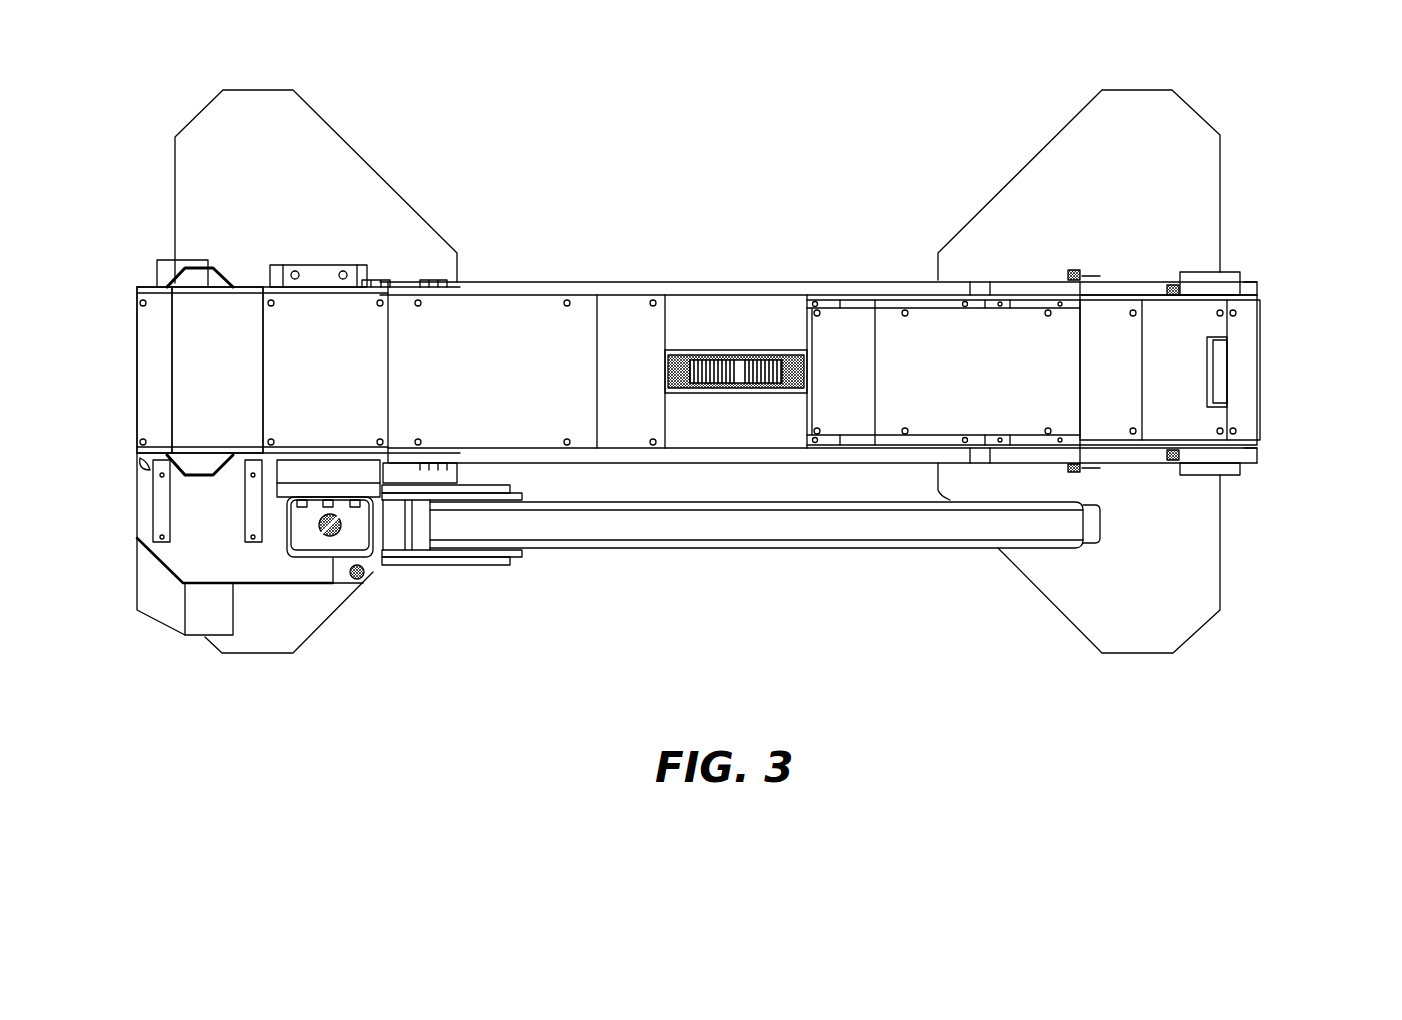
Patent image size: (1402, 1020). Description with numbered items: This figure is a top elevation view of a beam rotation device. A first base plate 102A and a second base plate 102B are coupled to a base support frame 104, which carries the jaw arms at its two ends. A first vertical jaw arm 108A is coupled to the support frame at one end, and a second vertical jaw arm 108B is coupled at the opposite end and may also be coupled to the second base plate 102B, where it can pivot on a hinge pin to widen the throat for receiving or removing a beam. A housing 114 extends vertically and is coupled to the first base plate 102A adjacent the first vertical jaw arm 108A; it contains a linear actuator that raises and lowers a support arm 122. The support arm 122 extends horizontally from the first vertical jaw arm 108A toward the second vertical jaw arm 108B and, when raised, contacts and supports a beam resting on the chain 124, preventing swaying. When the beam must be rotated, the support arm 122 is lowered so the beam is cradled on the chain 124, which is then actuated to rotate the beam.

The first base plate 102A is at (367, 197).
The second base plate 102B is at (1205, 577).
The base support frame 104 is at (727, 282).
The first vertical jaw arm 108A is at (137, 383).
The second vertical jaw arm 108B is at (1262, 345).
The housing 114 is at (183, 557).
The support arm 122 is at (820, 525).
The chain 124 is at (772, 355).